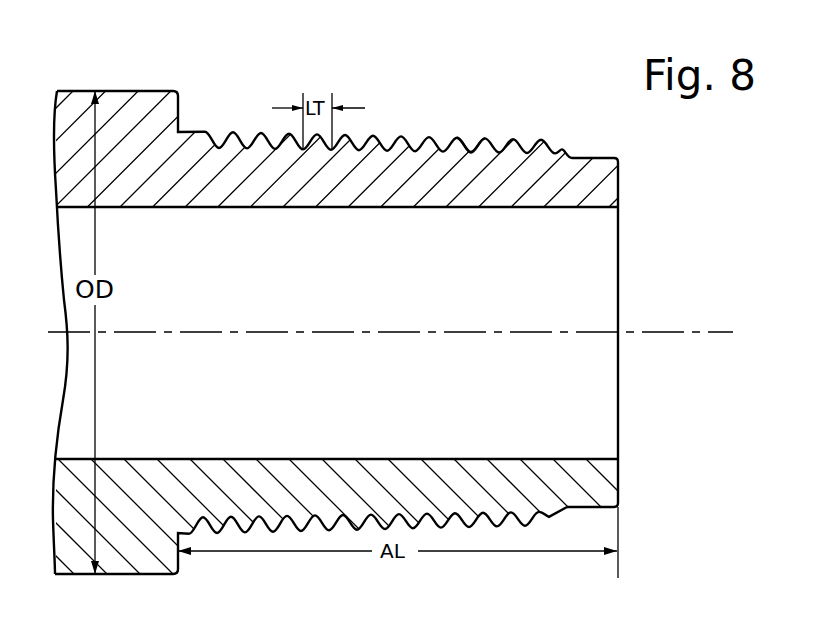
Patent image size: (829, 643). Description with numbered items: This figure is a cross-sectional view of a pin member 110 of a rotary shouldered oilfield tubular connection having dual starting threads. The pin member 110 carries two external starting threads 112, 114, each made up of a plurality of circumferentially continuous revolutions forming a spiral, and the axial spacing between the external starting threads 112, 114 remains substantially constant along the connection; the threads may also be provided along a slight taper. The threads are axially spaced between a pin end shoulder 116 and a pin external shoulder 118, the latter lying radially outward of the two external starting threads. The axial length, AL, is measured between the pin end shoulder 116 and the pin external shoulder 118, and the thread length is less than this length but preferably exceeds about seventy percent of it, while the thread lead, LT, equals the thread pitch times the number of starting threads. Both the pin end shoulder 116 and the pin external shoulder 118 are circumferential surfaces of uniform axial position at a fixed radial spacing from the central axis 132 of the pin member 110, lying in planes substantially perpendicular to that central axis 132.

The pin member 110 is at (384, 56).
The external starting thread 112 is at (444, 149).
The external starting thread 114 is at (473, 150).
The pin end shoulder 116 is at (619, 183).
The pin external shoulder 118 is at (180, 102).
The central axis 132 is at (353, 332).